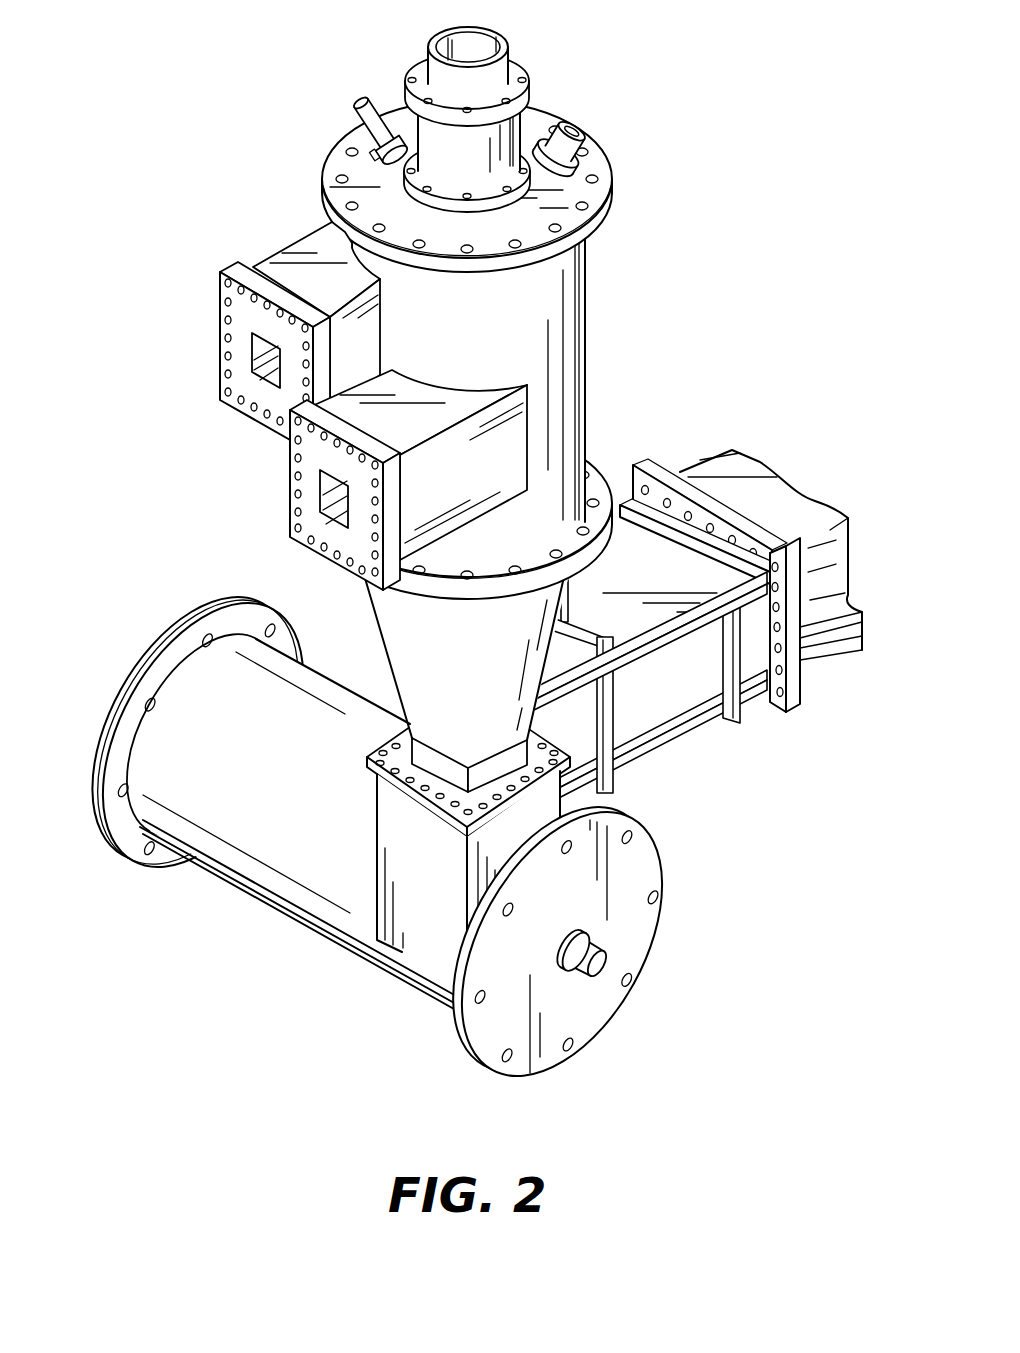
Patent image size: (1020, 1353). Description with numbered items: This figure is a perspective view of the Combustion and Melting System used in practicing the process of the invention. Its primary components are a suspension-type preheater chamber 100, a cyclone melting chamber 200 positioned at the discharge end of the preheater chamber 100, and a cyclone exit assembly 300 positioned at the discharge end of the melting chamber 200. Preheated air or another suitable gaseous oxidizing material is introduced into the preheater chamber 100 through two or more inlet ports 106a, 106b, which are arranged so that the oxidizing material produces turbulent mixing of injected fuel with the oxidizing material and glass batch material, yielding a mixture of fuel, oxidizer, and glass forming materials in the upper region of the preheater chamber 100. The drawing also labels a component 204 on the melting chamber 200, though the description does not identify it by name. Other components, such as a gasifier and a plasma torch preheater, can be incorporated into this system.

The suspension-type preheater chamber 100 is at (612, 320).
The inlet port 106a is at (307, 487).
The inlet port 106b is at (245, 332).
The cyclone melting chamber 200 is at (230, 928).
The discharge housing 204 is at (410, 892).
The cyclone exit assembly 300 is at (705, 776).